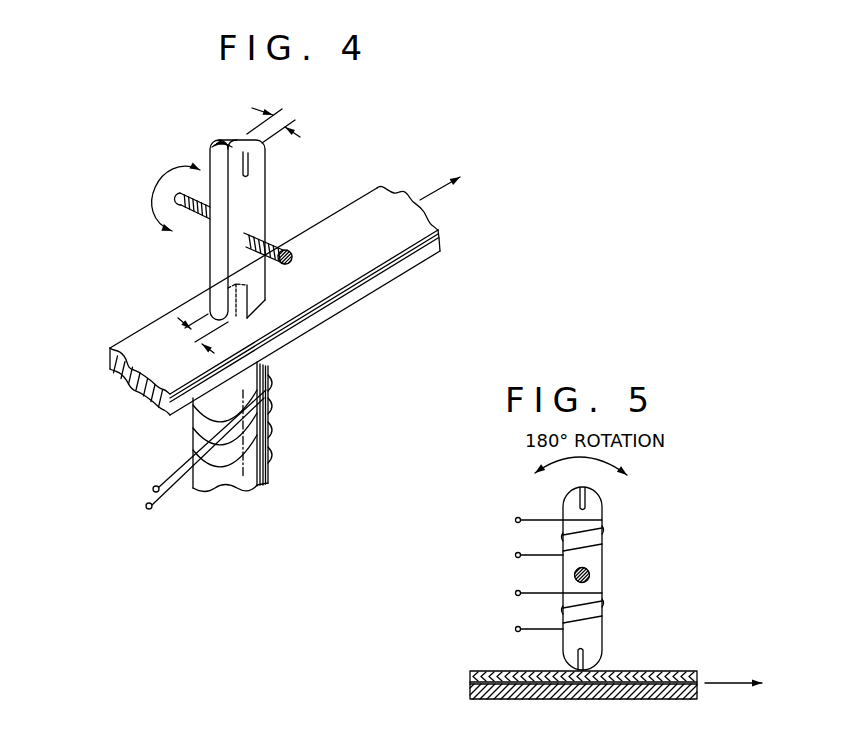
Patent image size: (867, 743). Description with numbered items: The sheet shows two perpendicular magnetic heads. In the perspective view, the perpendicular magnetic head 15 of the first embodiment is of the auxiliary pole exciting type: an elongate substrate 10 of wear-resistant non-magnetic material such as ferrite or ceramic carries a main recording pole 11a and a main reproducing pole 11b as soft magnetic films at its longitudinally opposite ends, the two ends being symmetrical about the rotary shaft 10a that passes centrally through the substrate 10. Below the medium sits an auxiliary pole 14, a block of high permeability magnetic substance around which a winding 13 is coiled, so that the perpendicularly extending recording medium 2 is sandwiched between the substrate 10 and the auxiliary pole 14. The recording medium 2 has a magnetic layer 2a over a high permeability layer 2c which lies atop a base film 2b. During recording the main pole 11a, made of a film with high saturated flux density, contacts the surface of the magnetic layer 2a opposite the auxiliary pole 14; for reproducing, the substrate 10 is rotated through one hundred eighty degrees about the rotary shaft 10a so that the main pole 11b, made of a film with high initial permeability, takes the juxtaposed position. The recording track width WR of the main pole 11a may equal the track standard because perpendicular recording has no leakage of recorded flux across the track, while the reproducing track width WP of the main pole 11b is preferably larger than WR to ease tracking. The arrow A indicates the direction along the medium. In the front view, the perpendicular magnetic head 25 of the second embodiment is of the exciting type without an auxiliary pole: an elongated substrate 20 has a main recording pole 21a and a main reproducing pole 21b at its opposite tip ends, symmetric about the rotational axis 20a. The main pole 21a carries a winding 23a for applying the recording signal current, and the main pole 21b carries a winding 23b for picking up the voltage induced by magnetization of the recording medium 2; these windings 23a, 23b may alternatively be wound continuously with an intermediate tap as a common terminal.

In FIG. 4, the magnetic recording medium 2 is at (362, 213).
In FIG. 5, the magnetic recording medium 2 is at (497, 665).
In FIG. 4, the magnetic layer 2a is at (440, 228).
In FIG. 5, the magnetic layer 2a is at (658, 672).
In FIG. 4, the base film 2b is at (397, 270).
In FIG. 5, the base film 2b is at (470, 692).
In FIG. 4, the high permeability layer 2c is at (435, 239).
In FIG. 5, the high permeability layer 2c is at (470, 683).
In FIG. 4, the substrate 10 is at (263, 189).
In FIG. 4, the rotary shaft 10a is at (291, 248).
In FIG. 4, the main recording pole 11a is at (249, 308).
In FIG. 4, the main reproducing pole 11b is at (240, 152).
In FIG. 4, the winding 13 is at (181, 463).
In FIG. 4, the auxiliary pole 14 is at (269, 458).
In FIG. 4, the perpendicular magnetic head 15 is at (160, 280).
In FIG. 5, the substrate 20 is at (573, 580).
In FIG. 5, the rotational axis 20a is at (590, 572).
In FIG. 5, the main recording pole 21a is at (577, 656).
In FIG. 5, the main reproducing pole 21b is at (586, 500).
In FIG. 5, the winding 23a is at (552, 611).
In FIG. 5, the winding 23b is at (540, 518).
In FIG. 5, the perpendicular magnetic head 25 is at (675, 565).
In FIG. 4, the feed direction A is at (445, 192).
In FIG. 5, the feed direction A is at (730, 681).
In FIG. 4, the reproducing track width WP is at (288, 117).
In FIG. 4, the recording track width WR is at (196, 336).